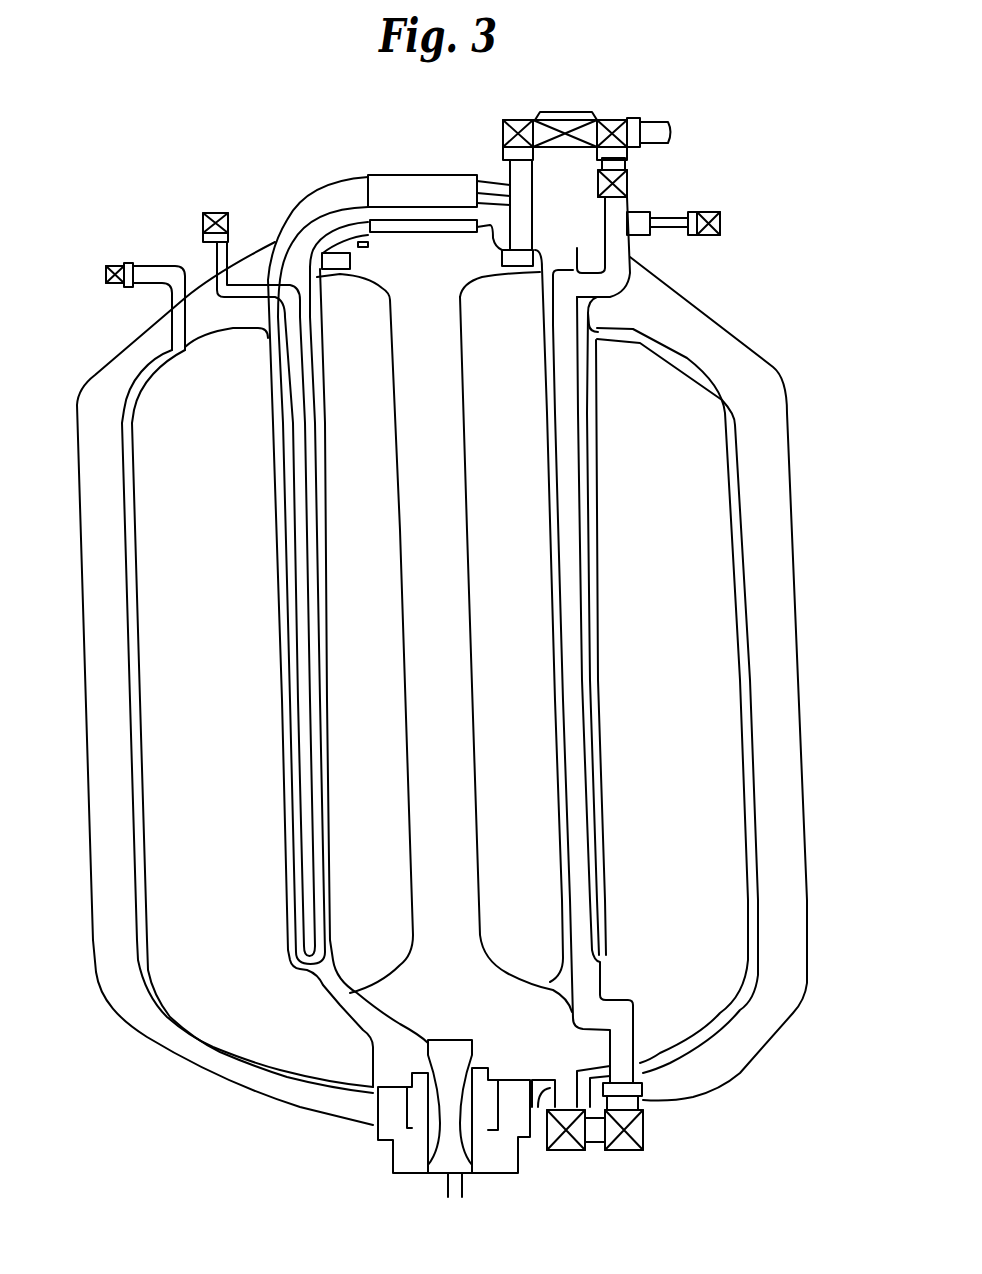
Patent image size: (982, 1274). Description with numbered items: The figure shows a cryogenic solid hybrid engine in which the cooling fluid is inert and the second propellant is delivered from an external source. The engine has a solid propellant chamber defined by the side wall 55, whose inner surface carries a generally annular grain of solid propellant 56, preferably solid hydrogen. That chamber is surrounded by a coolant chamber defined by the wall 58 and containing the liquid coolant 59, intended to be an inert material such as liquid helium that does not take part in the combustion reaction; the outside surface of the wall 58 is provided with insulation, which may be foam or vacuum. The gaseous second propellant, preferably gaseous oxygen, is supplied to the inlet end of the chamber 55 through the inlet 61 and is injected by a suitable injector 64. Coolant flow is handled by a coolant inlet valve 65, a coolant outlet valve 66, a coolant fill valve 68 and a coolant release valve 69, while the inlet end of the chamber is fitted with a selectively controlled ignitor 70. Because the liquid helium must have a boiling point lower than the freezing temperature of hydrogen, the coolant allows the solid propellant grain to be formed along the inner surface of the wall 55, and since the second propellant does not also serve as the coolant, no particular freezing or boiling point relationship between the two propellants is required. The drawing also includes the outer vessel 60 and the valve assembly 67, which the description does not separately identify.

The side wall 55 is at (547, 397).
The solid propellant 56 is at (505, 490).
The coolant chamber wall 58 is at (743, 640).
The liquid coolant 59 is at (700, 928).
The outer vessel 60 is at (787, 767).
The inlet 61 is at (657, 130).
The injector 64 is at (513, 256).
The coolant inlet valve 65 is at (203, 217).
The coolant outlet valve 66 is at (703, 235).
The valve assembly 67 is at (568, 135).
The coolant fill valve 68 is at (567, 1140).
The coolant release valve 69 is at (112, 284).
The ignitor 70 is at (373, 250).